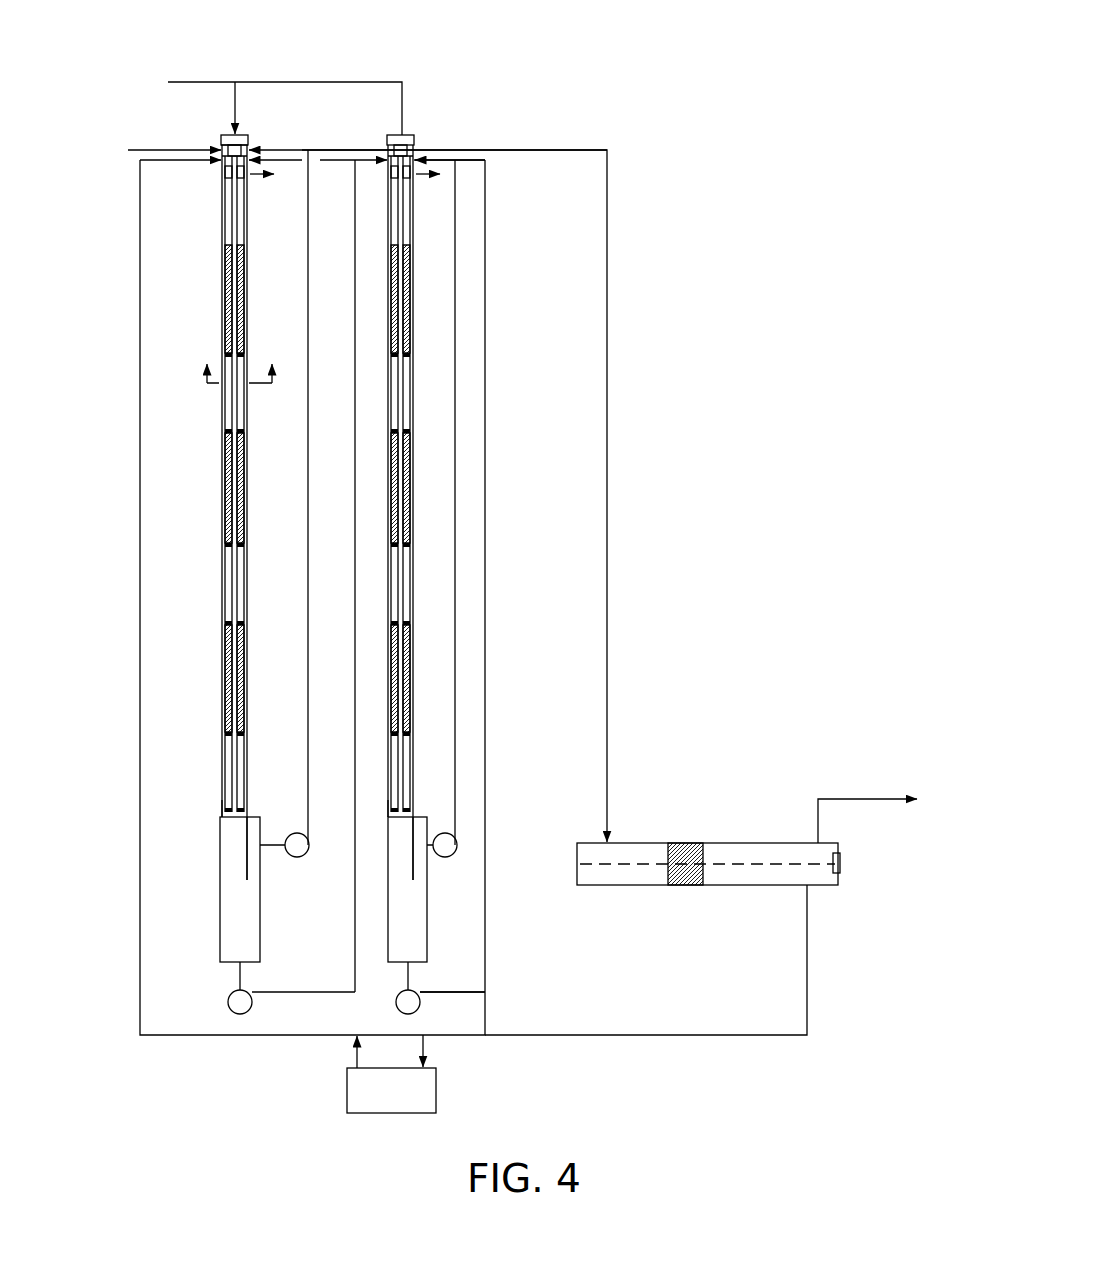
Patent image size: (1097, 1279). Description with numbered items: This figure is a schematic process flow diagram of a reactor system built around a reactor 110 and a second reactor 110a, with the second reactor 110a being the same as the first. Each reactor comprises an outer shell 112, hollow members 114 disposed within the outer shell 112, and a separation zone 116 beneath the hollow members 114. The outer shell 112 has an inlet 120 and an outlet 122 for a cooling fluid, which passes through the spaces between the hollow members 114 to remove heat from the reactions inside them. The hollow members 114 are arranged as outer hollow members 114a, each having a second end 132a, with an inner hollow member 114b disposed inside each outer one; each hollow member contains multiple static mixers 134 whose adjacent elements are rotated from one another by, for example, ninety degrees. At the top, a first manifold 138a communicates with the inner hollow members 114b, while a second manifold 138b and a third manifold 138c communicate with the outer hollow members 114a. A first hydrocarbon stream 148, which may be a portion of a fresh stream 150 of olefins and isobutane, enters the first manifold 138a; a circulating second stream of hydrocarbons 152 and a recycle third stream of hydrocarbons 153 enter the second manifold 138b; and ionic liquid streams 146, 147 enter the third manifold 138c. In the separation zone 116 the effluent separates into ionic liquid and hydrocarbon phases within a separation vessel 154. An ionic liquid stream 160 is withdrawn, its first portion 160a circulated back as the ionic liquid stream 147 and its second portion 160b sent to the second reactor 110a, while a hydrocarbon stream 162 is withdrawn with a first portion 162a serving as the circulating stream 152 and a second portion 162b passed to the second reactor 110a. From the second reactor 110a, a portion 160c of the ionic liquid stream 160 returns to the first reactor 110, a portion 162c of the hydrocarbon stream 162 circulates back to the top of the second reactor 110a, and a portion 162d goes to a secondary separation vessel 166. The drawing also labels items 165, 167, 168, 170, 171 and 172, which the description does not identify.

The reactor 110 is at (169, 116).
The second reactor 110a is at (416, 130).
The outer shell 112 is at (248, 268).
The hollow member 114 is at (245, 226).
The outer hollow member 114a is at (225, 562).
The inner hollow member 114b is at (225, 619).
The separation zone 116 is at (347, 889).
The inlet 120 is at (220, 812).
The outlet 122 is at (252, 176).
The second end 132a is at (208, 836).
The static mixer 134 is at (238, 338).
The first manifold 138a is at (221, 138).
The second manifold 138b is at (249, 140).
The third manifold 138c is at (222, 162).
The ionic liquid stream 146 is at (159, 161).
The ionic liquid stream 147 is at (304, 165).
The first hydrocarbon stream 148 is at (236, 98).
The fresh stream 150 is at (196, 82).
The second stream of hydrocarbons 152 is at (298, 150).
The third stream of hydrocarbons 153 is at (160, 150).
The separation vessel 154 is at (219, 898).
The ionic liquid stream 160 is at (357, 933).
The first portion of the ionic liquid stream 160a is at (336, 163).
The second portion of the ionic liquid stream 160b is at (358, 164).
The portion of the ionic liquid stream 160c is at (487, 1017).
The hydrocarbon stream 162 is at (308, 680).
The first portion of the hydrocarbon stream 162a is at (308, 150).
The second portion of the hydrocarbon stream 162b is at (358, 150).
The portion of the hydrocarbon stream 162c is at (435, 150).
The portion of the hydrocarbon stream 162d is at (524, 150).
The controller 165 is at (437, 1088).
The secondary separation vessel 166 is at (773, 843).
The outlet port 167 is at (840, 852).
The filter element 168 is at (688, 843).
The recycle line 170 is at (808, 961).
The flow path 171 is at (839, 885).
The product outlet 172 is at (868, 797).